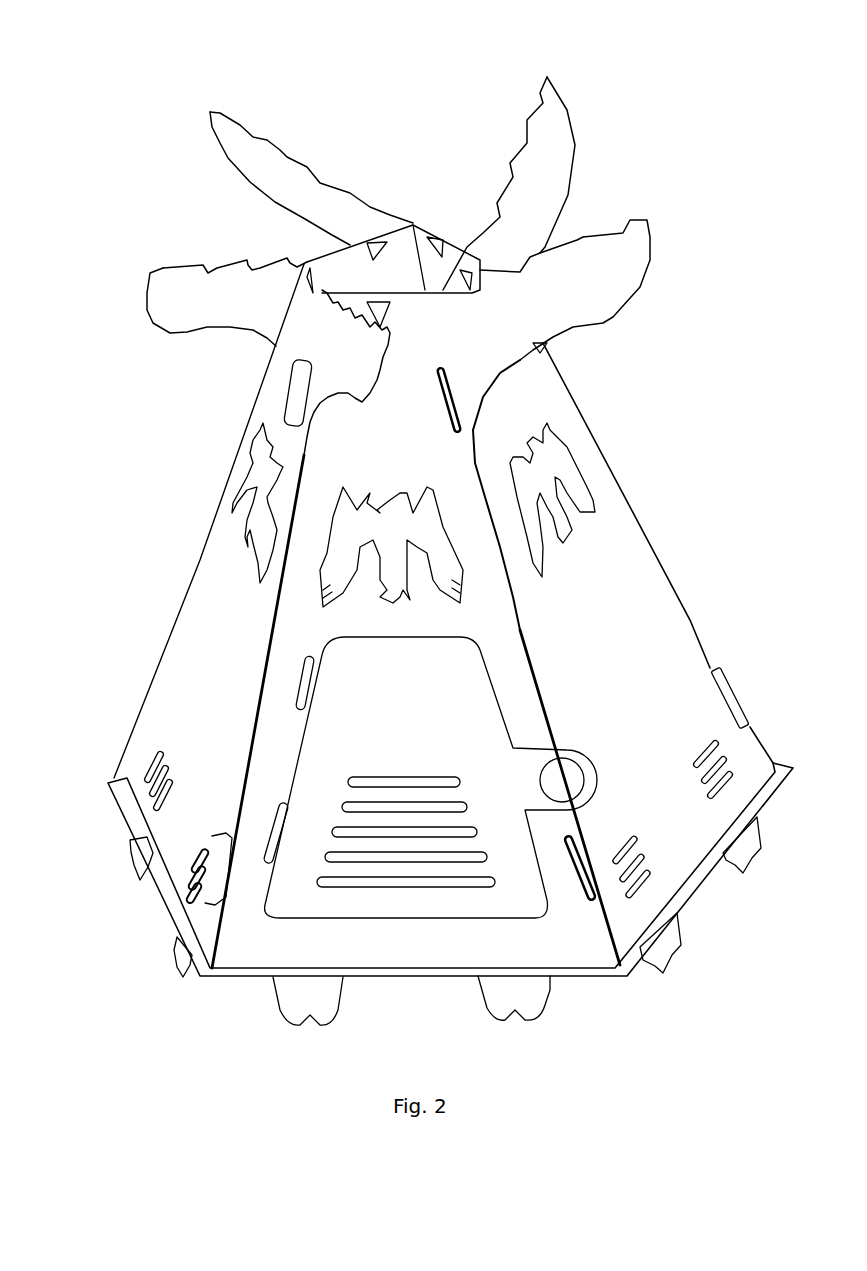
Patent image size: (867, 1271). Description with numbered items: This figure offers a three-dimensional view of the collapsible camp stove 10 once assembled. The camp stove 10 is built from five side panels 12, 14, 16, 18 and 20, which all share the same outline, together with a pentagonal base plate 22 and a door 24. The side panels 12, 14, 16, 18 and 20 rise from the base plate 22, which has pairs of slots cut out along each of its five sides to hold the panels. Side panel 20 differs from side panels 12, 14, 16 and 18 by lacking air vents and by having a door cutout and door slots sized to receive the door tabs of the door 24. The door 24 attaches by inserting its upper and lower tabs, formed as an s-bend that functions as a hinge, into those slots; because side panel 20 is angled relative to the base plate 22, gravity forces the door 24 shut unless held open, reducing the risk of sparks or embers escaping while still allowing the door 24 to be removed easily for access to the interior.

The collapsible camp stove 10 is at (172, 158).
The side panel 12 is at (218, 575).
The side panel 14 is at (233, 282).
The side panel 16 is at (283, 175).
The side panel 18 is at (618, 567).
The side panel 20 is at (620, 263).
The base plate 22 is at (690, 880).
The door 24 is at (310, 865).